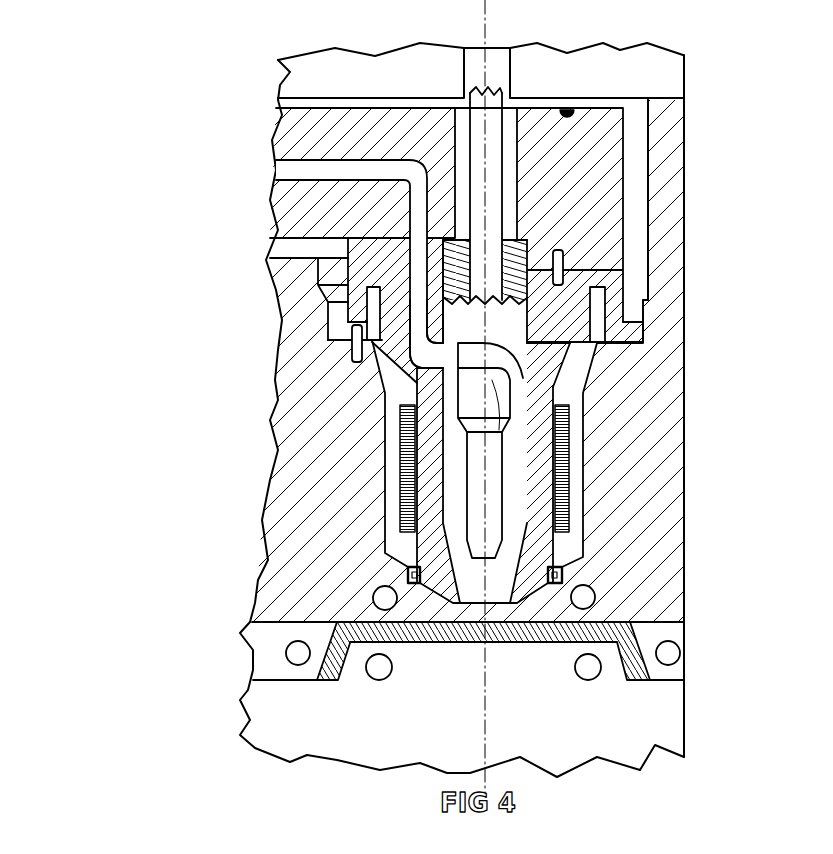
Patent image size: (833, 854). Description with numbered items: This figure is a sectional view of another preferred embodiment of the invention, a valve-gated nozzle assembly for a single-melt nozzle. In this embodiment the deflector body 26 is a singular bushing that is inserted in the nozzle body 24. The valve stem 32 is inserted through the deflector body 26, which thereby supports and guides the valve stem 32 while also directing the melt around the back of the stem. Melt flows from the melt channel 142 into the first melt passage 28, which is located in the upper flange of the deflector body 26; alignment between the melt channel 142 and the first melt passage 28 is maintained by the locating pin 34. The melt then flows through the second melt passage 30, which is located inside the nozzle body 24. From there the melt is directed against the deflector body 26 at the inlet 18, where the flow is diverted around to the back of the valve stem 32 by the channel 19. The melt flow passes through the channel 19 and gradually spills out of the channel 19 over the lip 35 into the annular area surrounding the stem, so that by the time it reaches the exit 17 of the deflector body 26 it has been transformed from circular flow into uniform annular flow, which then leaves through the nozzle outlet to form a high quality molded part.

The exit 17 is at (400, 420).
The inlet 18 is at (398, 353).
The channel 19 is at (512, 400).
The nozzle body 24 is at (572, 346).
The deflector body 26 is at (564, 272).
The first melt passage 28 is at (318, 272).
The second melt passage 30 is at (338, 338).
The valve stem 32 is at (490, 100).
The locating pin 34 is at (612, 307).
The lip 35 is at (570, 465).
The melt channel 142 is at (292, 173).